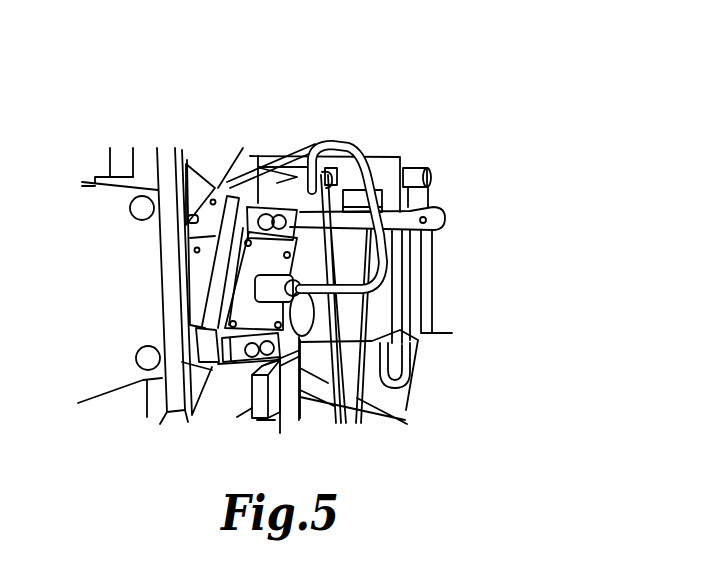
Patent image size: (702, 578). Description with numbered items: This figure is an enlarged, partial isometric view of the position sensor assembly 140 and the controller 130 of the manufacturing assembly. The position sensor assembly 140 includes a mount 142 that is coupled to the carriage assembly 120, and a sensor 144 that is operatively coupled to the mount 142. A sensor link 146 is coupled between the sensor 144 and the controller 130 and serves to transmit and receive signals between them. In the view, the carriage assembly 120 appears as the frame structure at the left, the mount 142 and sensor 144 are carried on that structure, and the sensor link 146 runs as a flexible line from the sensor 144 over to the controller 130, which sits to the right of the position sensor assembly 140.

The carriage assembly 120 is at (152, 134).
The controller 130 is at (460, 133).
The position sensor assembly 140 is at (304, 137).
The mount 142 is at (255, 158).
The sensor 144 is at (260, 280).
The sensor link 146 is at (350, 150).